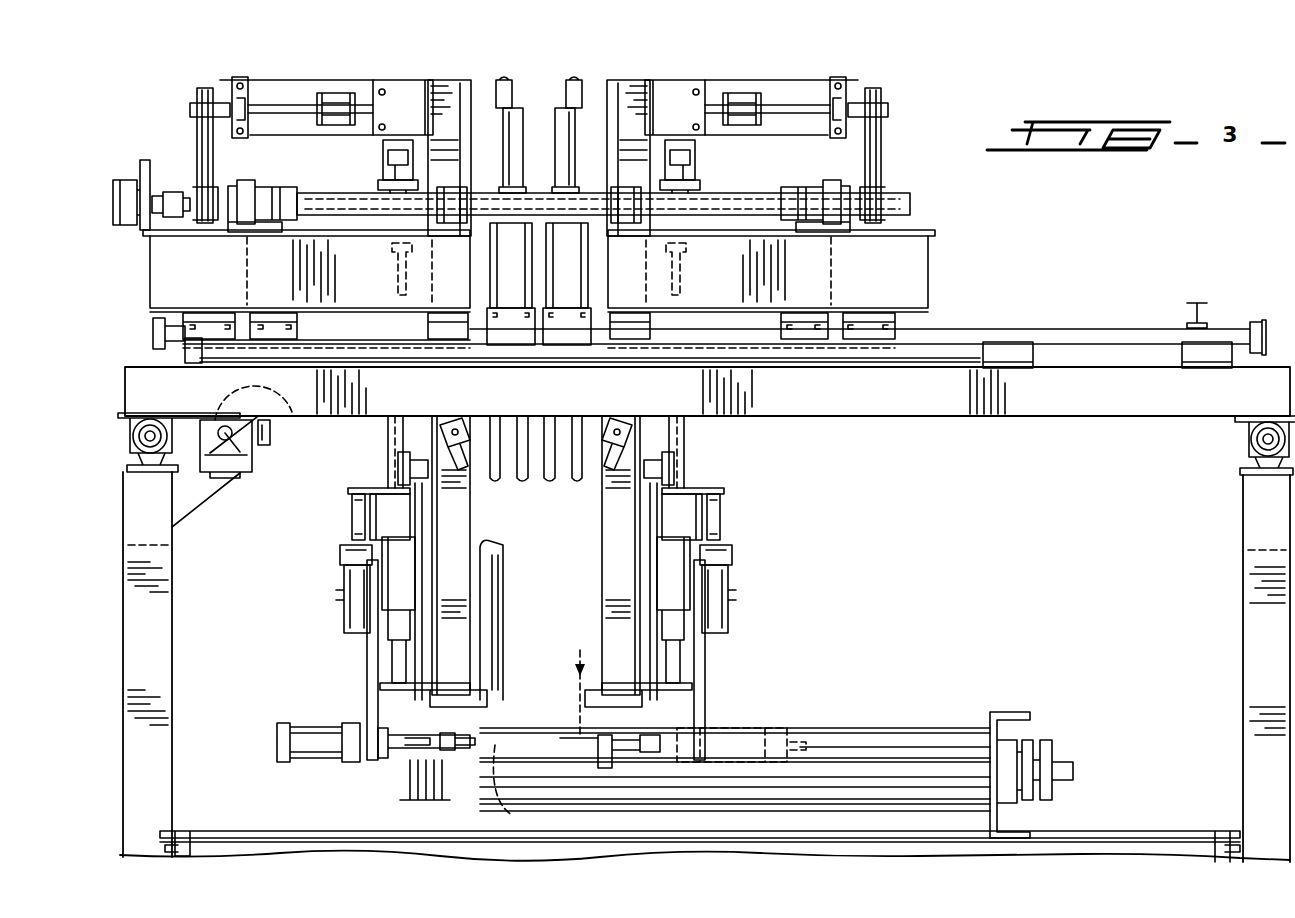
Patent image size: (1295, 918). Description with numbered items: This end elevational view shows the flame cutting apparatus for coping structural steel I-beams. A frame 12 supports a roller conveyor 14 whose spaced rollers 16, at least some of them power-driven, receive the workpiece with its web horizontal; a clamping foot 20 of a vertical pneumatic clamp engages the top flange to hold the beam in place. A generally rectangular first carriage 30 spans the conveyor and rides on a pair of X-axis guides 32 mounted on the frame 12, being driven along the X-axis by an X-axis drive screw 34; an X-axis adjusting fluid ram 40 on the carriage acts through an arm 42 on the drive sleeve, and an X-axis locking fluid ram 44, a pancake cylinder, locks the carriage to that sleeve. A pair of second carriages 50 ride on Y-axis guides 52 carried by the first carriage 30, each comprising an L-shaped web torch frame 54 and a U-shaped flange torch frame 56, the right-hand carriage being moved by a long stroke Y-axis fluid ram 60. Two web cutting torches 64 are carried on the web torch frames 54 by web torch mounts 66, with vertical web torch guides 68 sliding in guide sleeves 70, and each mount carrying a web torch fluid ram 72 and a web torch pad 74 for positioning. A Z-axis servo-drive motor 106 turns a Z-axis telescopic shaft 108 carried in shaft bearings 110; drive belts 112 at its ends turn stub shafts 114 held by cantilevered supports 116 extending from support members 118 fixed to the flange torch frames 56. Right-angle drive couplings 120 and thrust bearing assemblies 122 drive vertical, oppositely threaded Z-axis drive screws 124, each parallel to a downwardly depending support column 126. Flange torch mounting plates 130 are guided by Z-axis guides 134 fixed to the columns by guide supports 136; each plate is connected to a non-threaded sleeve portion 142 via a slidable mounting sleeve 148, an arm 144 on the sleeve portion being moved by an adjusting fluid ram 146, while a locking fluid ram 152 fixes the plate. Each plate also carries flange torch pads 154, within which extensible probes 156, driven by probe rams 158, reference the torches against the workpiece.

The frame 12 is at (1243, 589).
The roller conveyor 14 is at (1002, 716).
The rollers 16 is at (926, 736).
The clamping foot 20 is at (518, 667).
The first carriage 30 is at (856, 414).
The X-axis guides 32 is at (134, 438).
The X-axis drive screw 34 is at (246, 450).
The X-axis adjusting fluid ram 40 is at (274, 421).
The arm 42 is at (241, 432).
The X-axis locking fluid ram 44 is at (256, 391).
The second carriages 50 is at (541, 271).
The Y-axis guides 52 is at (972, 332).
The web torch frame 54 is at (241, 262).
The flange torch frame 56 is at (206, 265).
The long stroke Y-axis fluid ram 60 is at (356, 346).
The web cutting torches 64 is at (495, 471).
The web torch mount 66 is at (511, 322).
The web torch guides 68 is at (558, 144).
The guide sleeves 70 is at (525, 254).
The web torch fluid ram 72 is at (539, 134).
The web torch pad 74 is at (548, 477).
The Z-axis servo-drive motor 106 is at (121, 185).
The Z-axis telescopic shaft 108 is at (316, 203).
The shaft bearings 110 is at (248, 184).
The drive belts 112 is at (205, 146).
The stub shafts 114 is at (268, 106).
The cantilevered supports 116 is at (220, 80).
The support members 118 is at (373, 81).
The right-angle drive couplings 120 is at (396, 90).
The thrust bearing assemblies 122 is at (390, 182).
The Z-axis drive screw 124 is at (388, 440).
The support column 126 is at (458, 522).
The flange torch mounting plates 130 is at (368, 684).
The Z-axis guides 134 is at (396, 262).
The guide supports 136 is at (440, 458).
The sleeve portion 142 is at (392, 506).
The arm 144 is at (351, 488).
The adjusting fluid ram 146 is at (344, 548).
The mounting sleeve 148 is at (396, 570).
The locking fluid ram 152 is at (348, 598).
The flange torch pads 154 is at (470, 766).
The probes 156 is at (570, 645).
The probe rams 158 is at (316, 760).